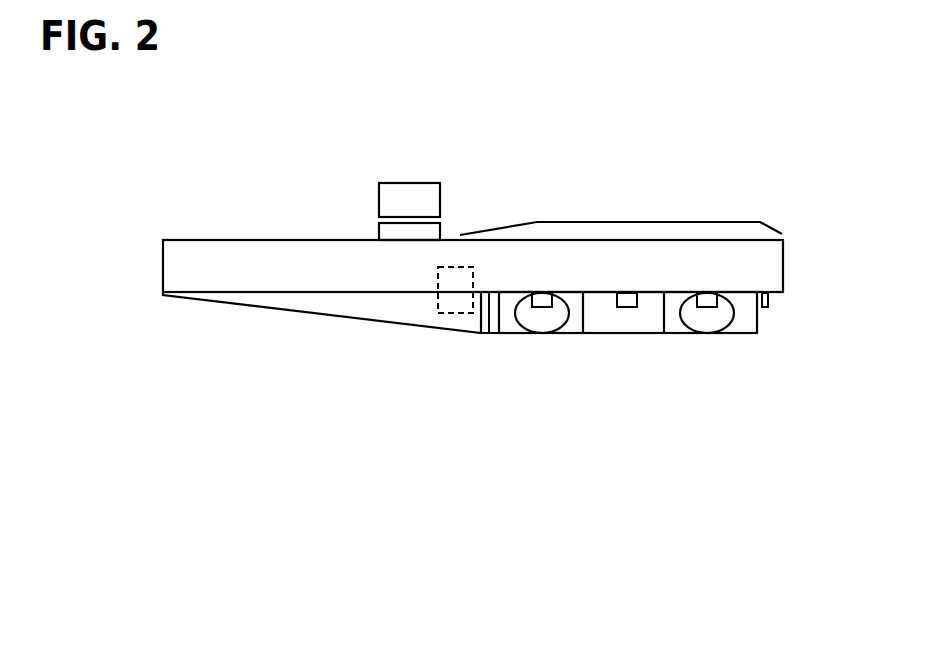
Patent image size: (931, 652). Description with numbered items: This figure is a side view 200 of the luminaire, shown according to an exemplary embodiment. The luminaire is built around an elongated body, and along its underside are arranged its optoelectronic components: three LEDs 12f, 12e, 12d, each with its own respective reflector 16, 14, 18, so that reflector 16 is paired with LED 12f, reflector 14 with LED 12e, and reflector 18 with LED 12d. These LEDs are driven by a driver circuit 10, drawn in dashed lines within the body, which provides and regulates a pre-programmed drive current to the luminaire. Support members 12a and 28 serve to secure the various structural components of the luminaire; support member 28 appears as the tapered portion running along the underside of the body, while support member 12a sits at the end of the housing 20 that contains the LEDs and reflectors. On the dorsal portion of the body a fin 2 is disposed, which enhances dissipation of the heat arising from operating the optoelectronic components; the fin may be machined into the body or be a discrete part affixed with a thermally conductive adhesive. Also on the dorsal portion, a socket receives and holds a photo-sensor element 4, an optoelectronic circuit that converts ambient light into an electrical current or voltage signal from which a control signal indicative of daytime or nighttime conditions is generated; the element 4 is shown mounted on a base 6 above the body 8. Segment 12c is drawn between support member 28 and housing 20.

The side view 200 is at (88, 109).
The fin 2 is at (652, 221).
The photo-sensor element 4 is at (410, 182).
The sensor mount 6 is at (380, 238).
The chassis body 8 is at (208, 238).
The driver circuit 10 is at (458, 315).
The support member 12a is at (767, 309).
The sensor 12c is at (487, 337).
The LED 12d is at (705, 293).
The LED 12e is at (650, 278).
The LED 12f is at (545, 292).
The reflector 14 is at (633, 320).
The reflector 16 is at (542, 320).
The reflector 18 is at (707, 320).
The undercarriage housing 20 is at (747, 335).
The support member 28 is at (278, 308).